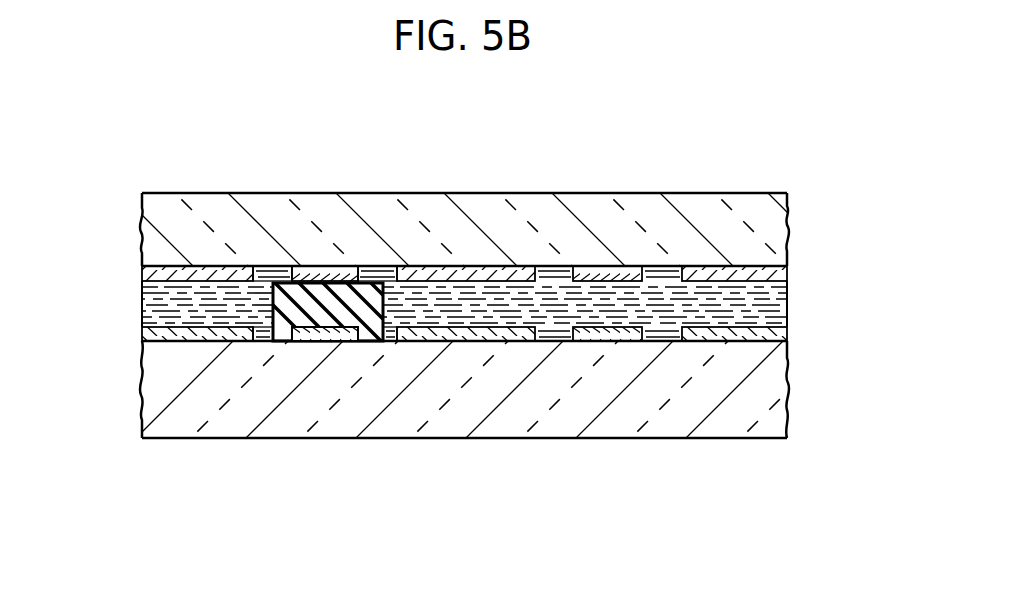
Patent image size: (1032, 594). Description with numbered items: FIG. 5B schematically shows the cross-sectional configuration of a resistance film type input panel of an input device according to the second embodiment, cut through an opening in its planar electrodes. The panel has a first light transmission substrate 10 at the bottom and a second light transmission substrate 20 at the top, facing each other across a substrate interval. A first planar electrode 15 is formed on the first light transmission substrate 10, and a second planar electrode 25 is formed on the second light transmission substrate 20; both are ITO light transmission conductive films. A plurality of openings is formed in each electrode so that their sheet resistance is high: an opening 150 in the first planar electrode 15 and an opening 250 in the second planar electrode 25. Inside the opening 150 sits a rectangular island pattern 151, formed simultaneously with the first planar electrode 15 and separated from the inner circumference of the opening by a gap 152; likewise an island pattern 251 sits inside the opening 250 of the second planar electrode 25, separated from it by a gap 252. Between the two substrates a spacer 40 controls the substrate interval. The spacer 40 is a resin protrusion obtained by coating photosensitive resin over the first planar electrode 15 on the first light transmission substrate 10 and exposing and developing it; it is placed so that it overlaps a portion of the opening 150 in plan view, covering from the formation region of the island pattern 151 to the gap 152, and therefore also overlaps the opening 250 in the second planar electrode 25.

The first light transmission substrate 10 is at (803, 445).
The second light transmission substrate 20 is at (803, 190).
The first planar electrode 15 is at (464, 454).
The second planar electrode 25 is at (464, 183).
The opening 150 is at (258, 330).
The island pattern 151 is at (332, 341).
The gap 152 is at (268, 330).
The opening 250 is at (263, 267).
The island pattern 251 is at (332, 267).
The gap 252 is at (273, 267).
The spacer 40 is at (357, 341).